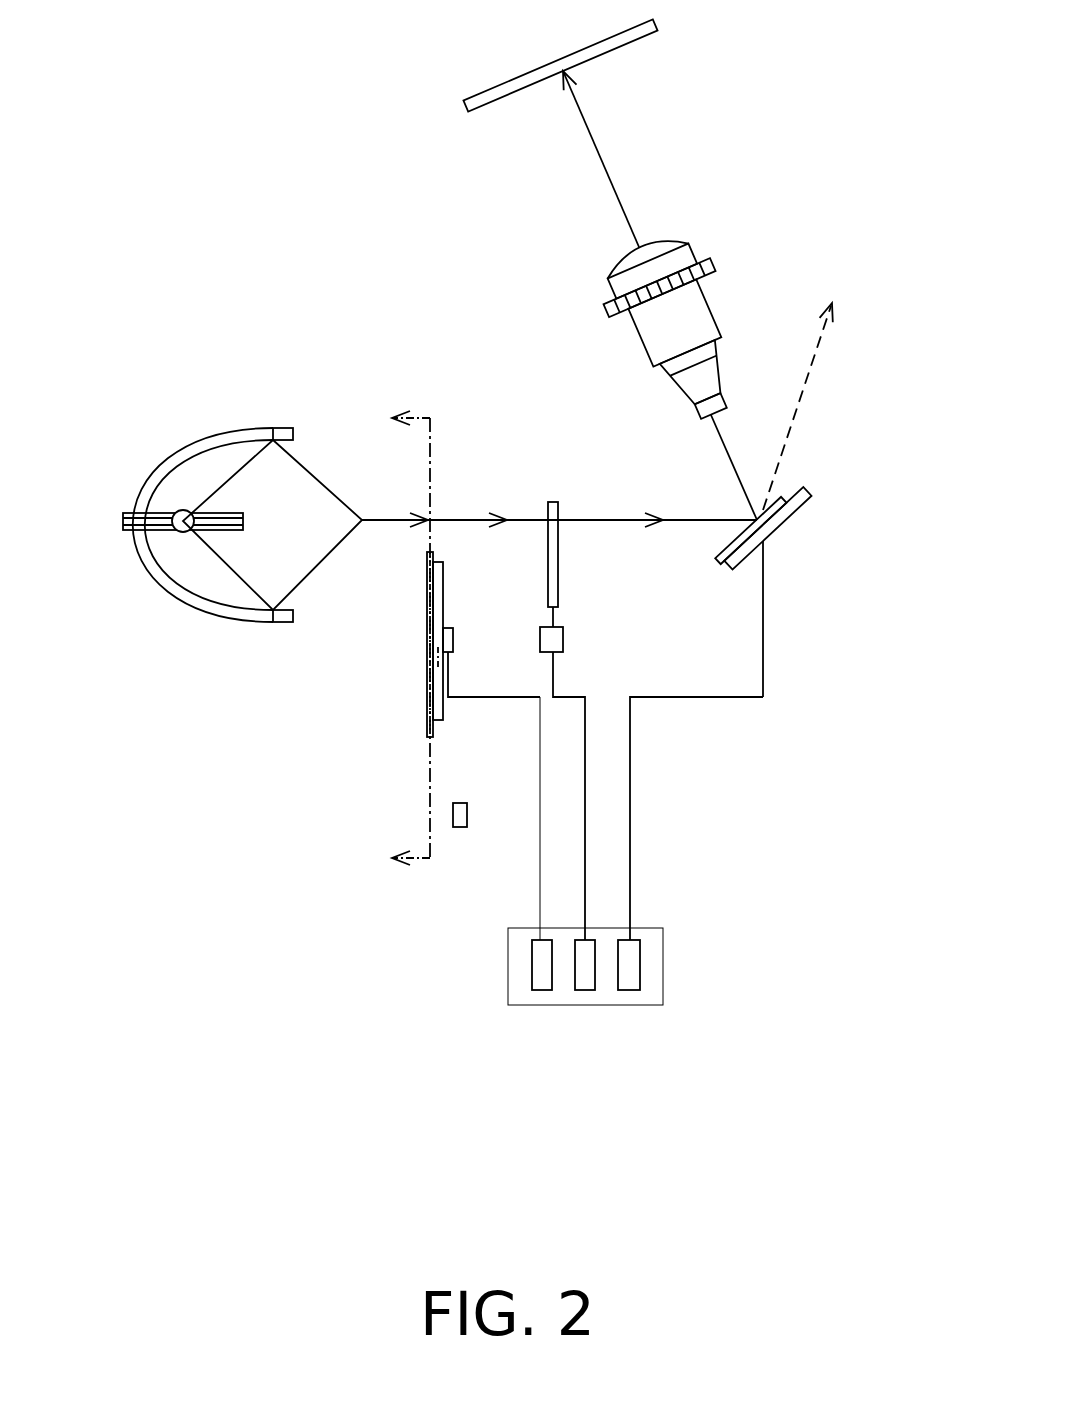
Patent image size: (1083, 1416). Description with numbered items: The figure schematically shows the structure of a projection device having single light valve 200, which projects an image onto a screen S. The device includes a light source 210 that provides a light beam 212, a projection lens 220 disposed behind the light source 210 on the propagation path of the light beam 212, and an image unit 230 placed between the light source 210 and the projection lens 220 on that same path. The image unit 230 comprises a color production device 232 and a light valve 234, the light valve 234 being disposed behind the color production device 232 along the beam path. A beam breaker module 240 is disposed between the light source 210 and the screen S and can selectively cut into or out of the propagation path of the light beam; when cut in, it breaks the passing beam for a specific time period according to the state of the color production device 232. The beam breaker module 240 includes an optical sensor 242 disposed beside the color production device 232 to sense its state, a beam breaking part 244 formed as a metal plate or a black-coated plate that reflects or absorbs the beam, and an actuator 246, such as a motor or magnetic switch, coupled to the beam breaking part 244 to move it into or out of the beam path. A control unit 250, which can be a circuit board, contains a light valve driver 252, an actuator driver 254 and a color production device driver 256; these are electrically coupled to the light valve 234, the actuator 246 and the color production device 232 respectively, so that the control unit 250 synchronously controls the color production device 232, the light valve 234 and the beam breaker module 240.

The projection device having single light valve 200 is at (478, 583).
The light source 210 is at (190, 573).
The light beam 212 is at (373, 523).
The projection lens 220 is at (697, 308).
The image unit 230 is at (557, 405).
The color production device 232 is at (440, 570).
The light valve 234 is at (753, 518).
The beam breaker module 240 is at (470, 1017).
The optical sensor 242 is at (462, 826).
The beam breaking part 244 is at (553, 582).
The actuator 246 is at (553, 642).
The control unit 250 is at (639, 1014).
The light valve driver 252 is at (628, 985).
The actuator driver 254 is at (585, 983).
The color production device driver 256 is at (542, 985).
The screen S is at (660, 22).